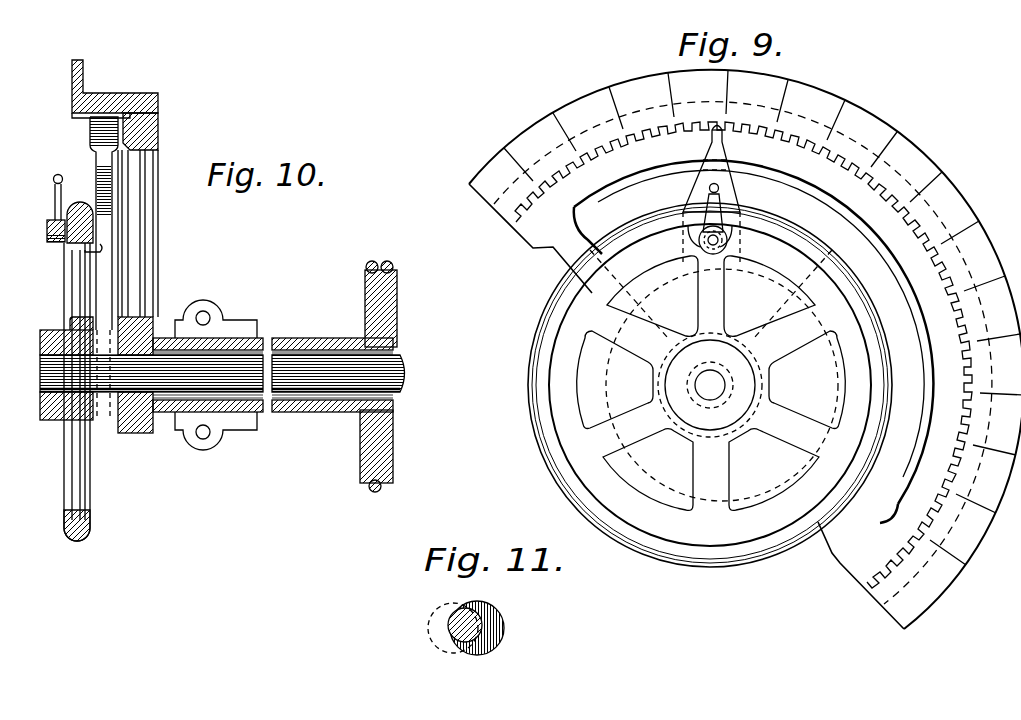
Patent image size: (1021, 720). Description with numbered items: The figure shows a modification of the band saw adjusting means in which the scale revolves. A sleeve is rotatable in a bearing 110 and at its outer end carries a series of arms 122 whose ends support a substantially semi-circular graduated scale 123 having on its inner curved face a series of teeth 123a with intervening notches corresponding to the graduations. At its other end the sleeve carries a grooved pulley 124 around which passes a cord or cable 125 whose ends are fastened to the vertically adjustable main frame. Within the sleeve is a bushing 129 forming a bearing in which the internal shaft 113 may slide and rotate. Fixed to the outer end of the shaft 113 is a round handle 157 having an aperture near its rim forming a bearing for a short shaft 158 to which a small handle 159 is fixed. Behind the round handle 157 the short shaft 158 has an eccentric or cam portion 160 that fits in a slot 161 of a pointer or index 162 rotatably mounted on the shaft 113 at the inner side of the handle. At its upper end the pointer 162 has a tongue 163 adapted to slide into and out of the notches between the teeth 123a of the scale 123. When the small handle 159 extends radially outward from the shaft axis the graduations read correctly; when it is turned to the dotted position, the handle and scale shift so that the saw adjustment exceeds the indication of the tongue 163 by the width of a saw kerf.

In FIG. 10, the bearing 110 is at (227, 330).
In FIG. 9, the shaft 113 is at (700, 383).
In FIG. 10, the shaft 113 is at (408, 381).
In FIG. 10, the arms 122 is at (152, 226).
In FIG. 9, the graduated scale 123 is at (917, 213).
In FIG. 10, the graduated scale 123 is at (95, 98).
In FIG. 9, the teeth 123a is at (850, 165).
In FIG. 10, the grooved pulley 124 is at (393, 454).
In FIG. 10, the cord or cable 125 is at (380, 492).
In FIG. 10, the bushing 129 is at (267, 347).
In FIG. 10, the round handle 157 is at (84, 543).
In FIG. 9, the short shaft 158 is at (727, 243).
In FIG. 10, the short shaft 158 is at (47, 231).
In FIG. 11, the short shaft 158 is at (458, 632).
In FIG. 9, the small handle 159 is at (722, 188).
In FIG. 10, the small handle 159 is at (55, 181).
In FIG. 11, the eccentric or cam portion 160 is at (491, 614).
In FIG. 10, the slot 161 is at (100, 247).
In FIG. 9, the pointer or index 162 is at (700, 190).
In FIG. 10, the pointer or index 162 is at (102, 286).
In FIG. 9, the tongue 163 is at (722, 128).